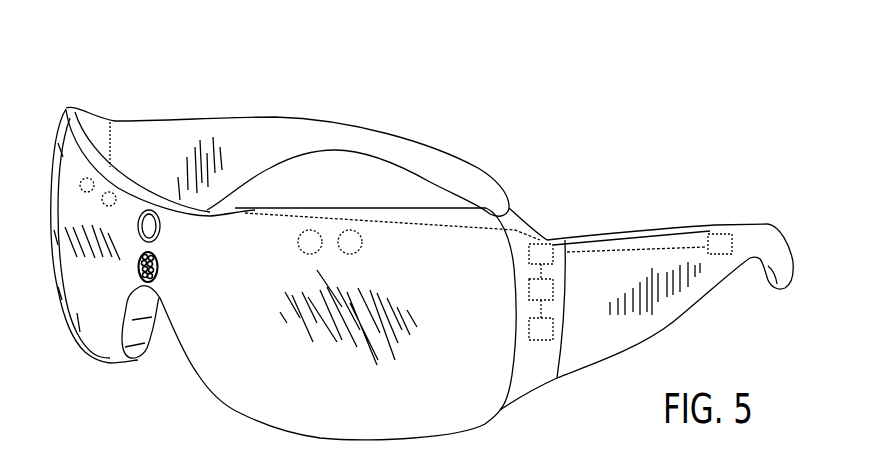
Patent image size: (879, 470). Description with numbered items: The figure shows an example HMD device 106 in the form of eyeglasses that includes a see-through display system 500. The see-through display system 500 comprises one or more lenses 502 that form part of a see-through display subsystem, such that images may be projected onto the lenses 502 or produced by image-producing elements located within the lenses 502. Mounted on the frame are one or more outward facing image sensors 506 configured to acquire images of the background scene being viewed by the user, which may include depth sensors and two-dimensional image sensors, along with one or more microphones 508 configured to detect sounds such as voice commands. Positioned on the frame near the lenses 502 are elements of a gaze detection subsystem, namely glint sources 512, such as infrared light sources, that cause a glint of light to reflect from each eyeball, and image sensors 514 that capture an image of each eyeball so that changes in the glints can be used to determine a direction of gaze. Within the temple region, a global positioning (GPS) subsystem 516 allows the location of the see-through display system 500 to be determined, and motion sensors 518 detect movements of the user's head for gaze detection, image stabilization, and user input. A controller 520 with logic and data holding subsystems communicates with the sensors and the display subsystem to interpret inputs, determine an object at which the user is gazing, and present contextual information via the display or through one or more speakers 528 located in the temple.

The HMD device 106 is at (673, 110).
The see-through display system 500 is at (488, 132).
The lenses 502 is at (443, 412).
The outward facing image sensors 506 is at (170, 231).
The microphones 508 is at (168, 269).
The glint sources 512 is at (110, 192).
The image sensors 514 is at (88, 178).
The global positioning (GPS) subsystem 516 is at (553, 297).
The motion sensors 518 is at (553, 333).
The controller 520 is at (542, 243).
The speakers 528 is at (718, 234).